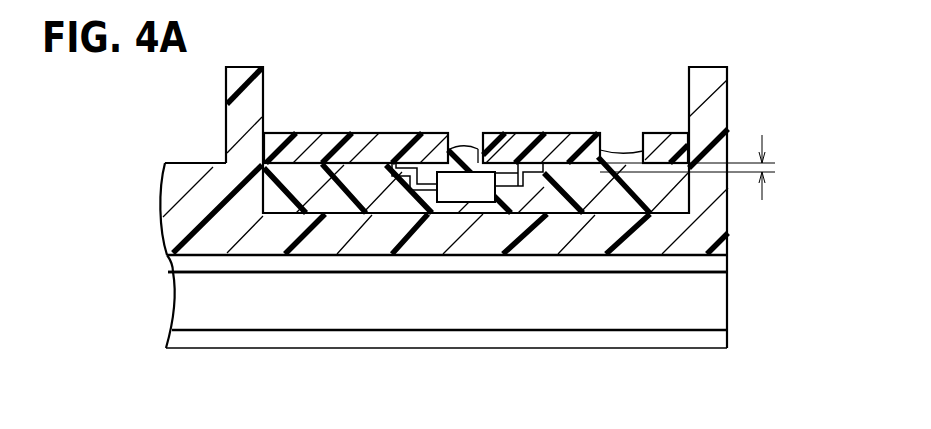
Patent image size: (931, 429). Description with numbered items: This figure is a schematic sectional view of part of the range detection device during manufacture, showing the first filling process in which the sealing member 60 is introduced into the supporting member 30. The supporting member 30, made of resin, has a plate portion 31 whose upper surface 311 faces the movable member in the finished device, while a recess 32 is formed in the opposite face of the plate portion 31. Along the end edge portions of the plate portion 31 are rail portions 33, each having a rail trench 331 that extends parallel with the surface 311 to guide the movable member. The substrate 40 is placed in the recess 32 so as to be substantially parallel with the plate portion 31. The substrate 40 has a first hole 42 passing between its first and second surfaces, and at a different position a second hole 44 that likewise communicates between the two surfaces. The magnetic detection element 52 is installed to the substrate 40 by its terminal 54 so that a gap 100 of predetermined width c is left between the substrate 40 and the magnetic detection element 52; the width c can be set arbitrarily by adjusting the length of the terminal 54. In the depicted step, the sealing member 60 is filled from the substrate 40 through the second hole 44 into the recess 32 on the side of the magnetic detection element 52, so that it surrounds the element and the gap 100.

The supporting member 30 is at (185, 160).
The plate portion 31 is at (640, 256).
The surface 311 is at (593, 256).
The recess 32 is at (264, 97).
The rail portion 33 is at (222, 349).
The rail trench 331 is at (286, 273).
The substrate 40 is at (345, 132).
The first hole 42 is at (455, 148).
The second hole 44 is at (603, 133).
The magnetic detection element 52 is at (462, 203).
The terminal 54 is at (418, 192).
The sealing member 60 is at (626, 150).
The gap 100 is at (479, 150).
The width c is at (776, 170).